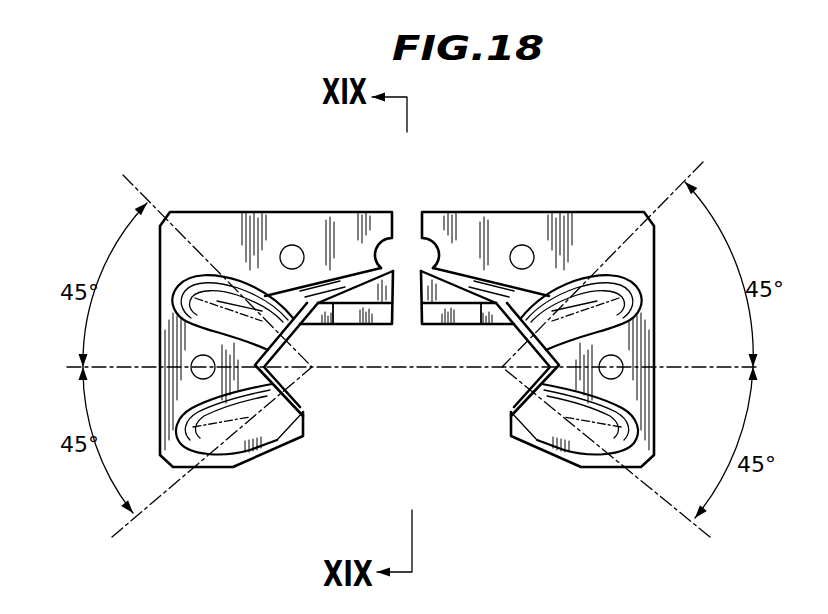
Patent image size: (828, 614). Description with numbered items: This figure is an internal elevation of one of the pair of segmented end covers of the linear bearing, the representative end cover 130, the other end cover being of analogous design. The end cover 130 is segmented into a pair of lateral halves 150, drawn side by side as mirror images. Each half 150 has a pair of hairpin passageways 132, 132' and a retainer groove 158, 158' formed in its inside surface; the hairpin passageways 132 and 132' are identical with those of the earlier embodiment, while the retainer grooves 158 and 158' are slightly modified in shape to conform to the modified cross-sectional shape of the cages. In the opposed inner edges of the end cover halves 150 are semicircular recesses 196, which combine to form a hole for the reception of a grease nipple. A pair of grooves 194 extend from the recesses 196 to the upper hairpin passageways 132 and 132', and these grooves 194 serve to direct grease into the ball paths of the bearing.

The end cover 130 is at (560, 170).
The lateral halves 150 is at (221, 232).
The grooves 194 is at (322, 270).
The semicircular recesses 196 is at (427, 268).
The retainer groove 158 is at (504, 359).
The retainer groove 158' is at (311, 359).
The hairpin passageway 132 is at (612, 360).
The hairpin passageway 132' is at (227, 342).